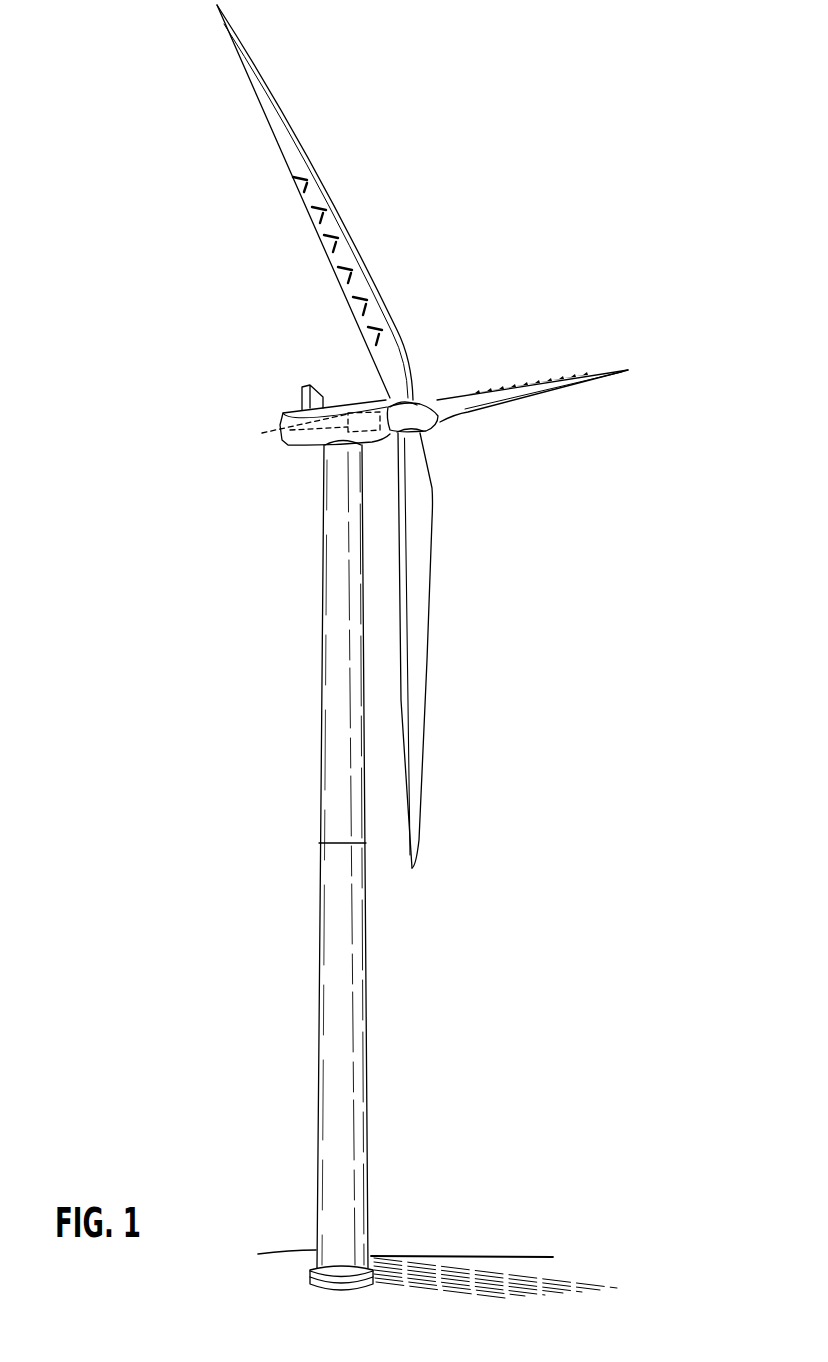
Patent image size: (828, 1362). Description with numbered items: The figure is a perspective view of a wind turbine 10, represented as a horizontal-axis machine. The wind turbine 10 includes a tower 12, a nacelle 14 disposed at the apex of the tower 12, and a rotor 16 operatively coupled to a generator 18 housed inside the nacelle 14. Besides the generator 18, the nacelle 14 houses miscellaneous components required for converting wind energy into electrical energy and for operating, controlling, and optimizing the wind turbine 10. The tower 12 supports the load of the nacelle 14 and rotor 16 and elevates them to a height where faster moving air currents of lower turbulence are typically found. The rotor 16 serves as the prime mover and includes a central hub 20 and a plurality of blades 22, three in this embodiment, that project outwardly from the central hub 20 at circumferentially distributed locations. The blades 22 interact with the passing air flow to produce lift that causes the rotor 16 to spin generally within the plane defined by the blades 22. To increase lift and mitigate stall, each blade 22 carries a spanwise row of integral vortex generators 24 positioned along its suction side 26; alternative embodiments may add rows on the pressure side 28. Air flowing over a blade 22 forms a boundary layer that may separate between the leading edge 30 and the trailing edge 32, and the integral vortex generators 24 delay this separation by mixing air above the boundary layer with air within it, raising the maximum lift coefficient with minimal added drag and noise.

The wind turbine 10 is at (518, 211).
The tower 12 is at (322, 652).
The nacelle 14 is at (311, 414).
The rotor 16 is at (434, 428).
The generator 18 is at (270, 432).
The central hub 20 is at (430, 401).
The blades 22 is at (444, 436).
The integral vortex generators 24 is at (340, 248).
The suction side 26 is at (336, 265).
The pressure side 28 is at (607, 378).
The leading edge 30 is at (358, 325).
The trailing edge 32 is at (378, 297).